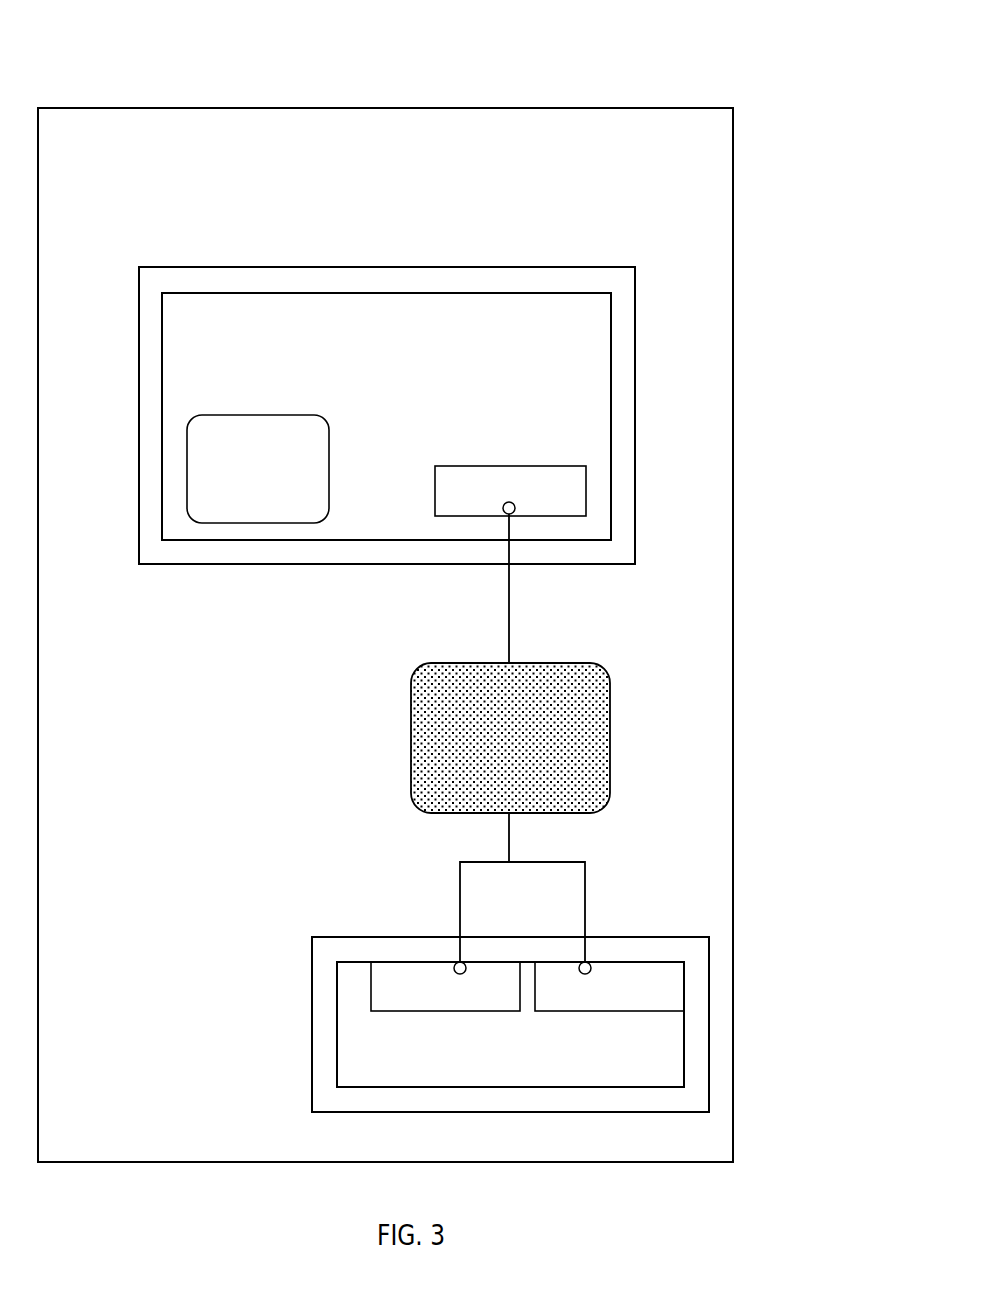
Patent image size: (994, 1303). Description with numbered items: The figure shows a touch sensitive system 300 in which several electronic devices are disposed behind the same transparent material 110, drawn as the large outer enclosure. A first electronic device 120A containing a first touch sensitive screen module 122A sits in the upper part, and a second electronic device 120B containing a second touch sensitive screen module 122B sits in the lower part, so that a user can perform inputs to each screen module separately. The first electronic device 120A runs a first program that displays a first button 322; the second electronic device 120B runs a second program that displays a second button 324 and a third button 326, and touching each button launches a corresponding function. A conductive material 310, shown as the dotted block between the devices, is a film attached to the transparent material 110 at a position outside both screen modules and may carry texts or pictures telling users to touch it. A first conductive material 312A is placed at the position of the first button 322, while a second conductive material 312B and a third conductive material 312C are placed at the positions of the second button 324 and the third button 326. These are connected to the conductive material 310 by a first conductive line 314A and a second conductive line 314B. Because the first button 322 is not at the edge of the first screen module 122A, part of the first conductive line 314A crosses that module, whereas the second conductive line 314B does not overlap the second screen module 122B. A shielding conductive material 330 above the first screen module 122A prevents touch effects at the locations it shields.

The touch sensitive system 300 is at (683, 95).
The transparent material 110 is at (733, 690).
The first electronic device 120A is at (163, 564).
The first touch sensitive screen module 122A is at (338, 540).
The shielding conductive material 330 is at (272, 488).
The first button 322 is at (557, 501).
The first conductive material 312A is at (515, 505).
The first conductive line 314A is at (509, 632).
The conductive material 310 is at (522, 758).
The second conductive line 314B is at (545, 862).
The second conductive material 312B is at (591, 968).
The third conductive material 312C is at (460, 962).
The second electronic device 120B is at (337, 937).
The second touch sensitive screen module 122B is at (337, 1050).
The third button 326 is at (492, 996).
The second button 324 is at (655, 996).